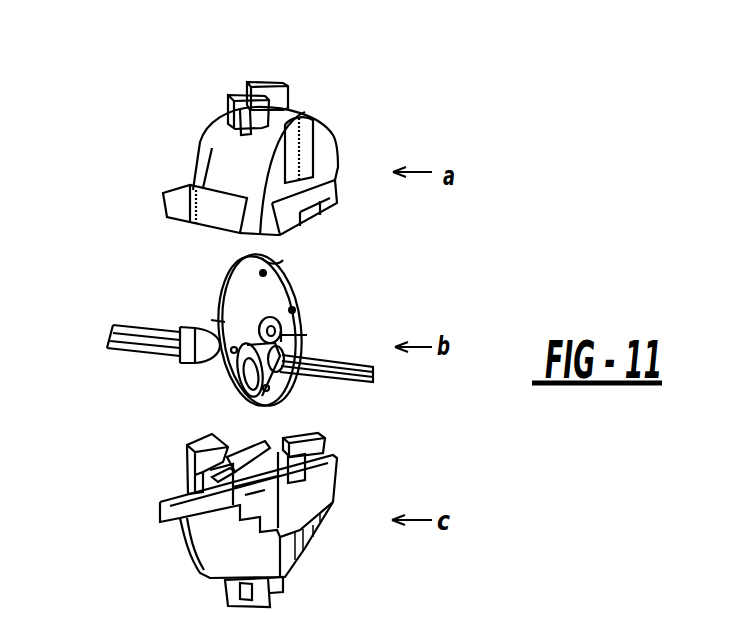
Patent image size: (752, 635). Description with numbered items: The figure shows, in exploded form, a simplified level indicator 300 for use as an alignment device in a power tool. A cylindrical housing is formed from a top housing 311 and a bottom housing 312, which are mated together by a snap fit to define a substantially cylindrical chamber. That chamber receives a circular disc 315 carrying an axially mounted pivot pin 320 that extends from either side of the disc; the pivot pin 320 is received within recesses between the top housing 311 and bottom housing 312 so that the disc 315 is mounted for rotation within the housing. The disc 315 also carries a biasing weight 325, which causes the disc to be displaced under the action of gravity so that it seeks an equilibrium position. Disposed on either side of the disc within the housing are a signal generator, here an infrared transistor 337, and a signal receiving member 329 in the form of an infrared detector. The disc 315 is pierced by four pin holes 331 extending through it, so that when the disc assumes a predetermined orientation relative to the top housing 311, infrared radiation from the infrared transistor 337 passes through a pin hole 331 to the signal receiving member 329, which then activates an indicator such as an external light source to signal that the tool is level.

The level indicator 300 is at (349, 99).
The top housing 311 is at (320, 152).
The bottom housing 312 is at (220, 548).
The circular disc 315 is at (233, 285).
The pivot pin 320 is at (293, 330).
The biasing weight 325 is at (227, 393).
The signal receiving member 329 is at (273, 358).
The pin holes 331 is at (293, 308).
The infrared transistor 337 is at (200, 362).